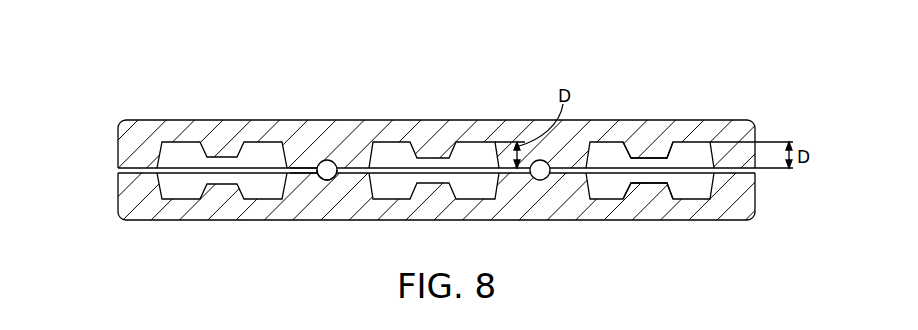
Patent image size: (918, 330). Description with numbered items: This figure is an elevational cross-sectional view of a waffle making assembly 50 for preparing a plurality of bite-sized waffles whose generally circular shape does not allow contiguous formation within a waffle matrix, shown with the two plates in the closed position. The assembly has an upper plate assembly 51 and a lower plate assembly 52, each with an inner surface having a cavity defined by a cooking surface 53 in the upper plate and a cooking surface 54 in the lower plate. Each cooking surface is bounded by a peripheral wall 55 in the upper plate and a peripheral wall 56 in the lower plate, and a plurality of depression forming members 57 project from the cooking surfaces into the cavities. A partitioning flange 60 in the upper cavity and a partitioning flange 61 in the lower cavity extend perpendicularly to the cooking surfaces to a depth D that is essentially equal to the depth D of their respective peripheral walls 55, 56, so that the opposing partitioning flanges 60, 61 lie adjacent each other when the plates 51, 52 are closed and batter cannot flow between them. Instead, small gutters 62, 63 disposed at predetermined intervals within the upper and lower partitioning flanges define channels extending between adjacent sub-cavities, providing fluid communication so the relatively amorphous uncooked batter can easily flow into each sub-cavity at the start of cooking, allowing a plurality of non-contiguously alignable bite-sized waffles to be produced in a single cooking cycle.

The connector body assembly 50 is at (457, 63).
The upper plate assembly 51 is at (116, 141).
The lower plate assembly 52 is at (117, 184).
The cooking surface 53 is at (187, 143).
The cooking surface 54 is at (190, 192).
The peripheral wall 55 is at (699, 167).
The peripheral wall 56 is at (697, 177).
The depression forming member 57 is at (648, 157).
The partitioning flange 60 is at (303, 163).
The partitioning flange 61 is at (306, 185).
The gutter 62 is at (326, 159).
The gutter 63 is at (326, 181).